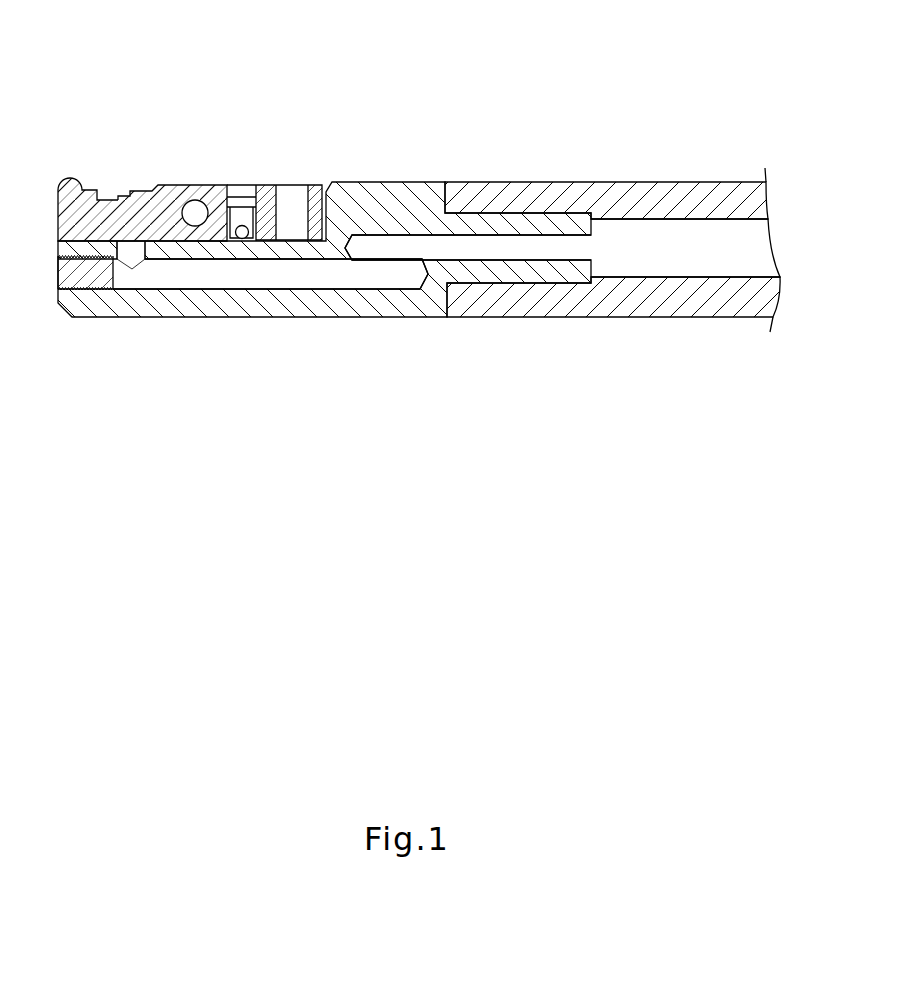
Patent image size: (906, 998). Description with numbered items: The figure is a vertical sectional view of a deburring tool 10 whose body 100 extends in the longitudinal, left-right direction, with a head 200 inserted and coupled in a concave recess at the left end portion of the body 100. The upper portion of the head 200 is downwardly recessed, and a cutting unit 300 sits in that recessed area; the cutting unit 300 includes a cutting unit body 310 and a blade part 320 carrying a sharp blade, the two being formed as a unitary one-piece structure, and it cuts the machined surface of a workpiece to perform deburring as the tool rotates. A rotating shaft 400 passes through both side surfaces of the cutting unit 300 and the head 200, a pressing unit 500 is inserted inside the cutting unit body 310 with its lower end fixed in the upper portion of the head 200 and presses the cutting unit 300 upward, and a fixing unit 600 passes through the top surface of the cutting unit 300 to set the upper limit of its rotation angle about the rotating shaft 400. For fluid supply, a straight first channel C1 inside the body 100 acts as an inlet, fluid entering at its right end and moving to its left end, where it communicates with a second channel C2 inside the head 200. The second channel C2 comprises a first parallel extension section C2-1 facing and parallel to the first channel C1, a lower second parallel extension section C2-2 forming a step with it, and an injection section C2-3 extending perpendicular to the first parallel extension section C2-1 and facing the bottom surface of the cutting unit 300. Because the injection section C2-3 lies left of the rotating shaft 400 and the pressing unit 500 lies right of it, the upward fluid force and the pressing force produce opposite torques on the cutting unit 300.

The deburring tool 10 is at (70, 24).
The body 100 is at (607, 197).
The head 200 is at (413, 198).
The cutting unit 300 is at (157, 118).
The cutting unit body 310 is at (170, 187).
The blade part 320 is at (70, 180).
The rotating shaft 400 is at (195, 211).
The pressing unit 500 is at (241, 205).
The fixing unit 600 is at (297, 205).
The first channel C1 is at (690, 249).
The second channel C2 is at (480, 367).
The first parallel extension section C2-1 is at (481, 244).
The second parallel extension section C2-2 is at (256, 269).
The injection section C2-3 is at (136, 255).